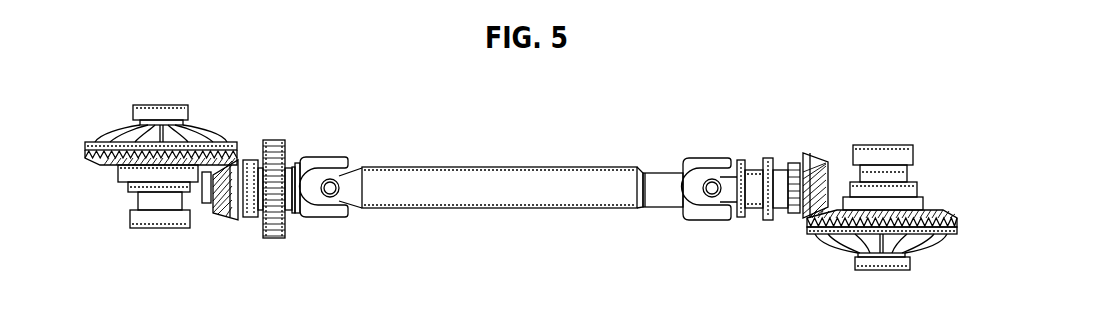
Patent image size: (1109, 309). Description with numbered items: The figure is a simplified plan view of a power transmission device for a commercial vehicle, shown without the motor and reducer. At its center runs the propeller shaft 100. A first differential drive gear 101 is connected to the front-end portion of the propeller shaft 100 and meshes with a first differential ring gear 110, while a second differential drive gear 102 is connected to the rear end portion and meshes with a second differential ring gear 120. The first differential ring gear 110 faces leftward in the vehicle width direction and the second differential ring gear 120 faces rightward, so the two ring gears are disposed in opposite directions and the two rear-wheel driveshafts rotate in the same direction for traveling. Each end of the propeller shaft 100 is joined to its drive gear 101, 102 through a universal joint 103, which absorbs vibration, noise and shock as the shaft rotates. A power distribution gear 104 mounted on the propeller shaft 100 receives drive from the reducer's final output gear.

The propeller shaft 100 is at (499, 166).
The first differential drive gear 101 is at (215, 215).
The second differential drive gear 102 is at (820, 155).
The universal joint 103 is at (337, 197).
The power distribution gear 104 is at (275, 140).
The first differential ring gear 110 is at (105, 165).
The second differential ring gear 120 is at (933, 210).